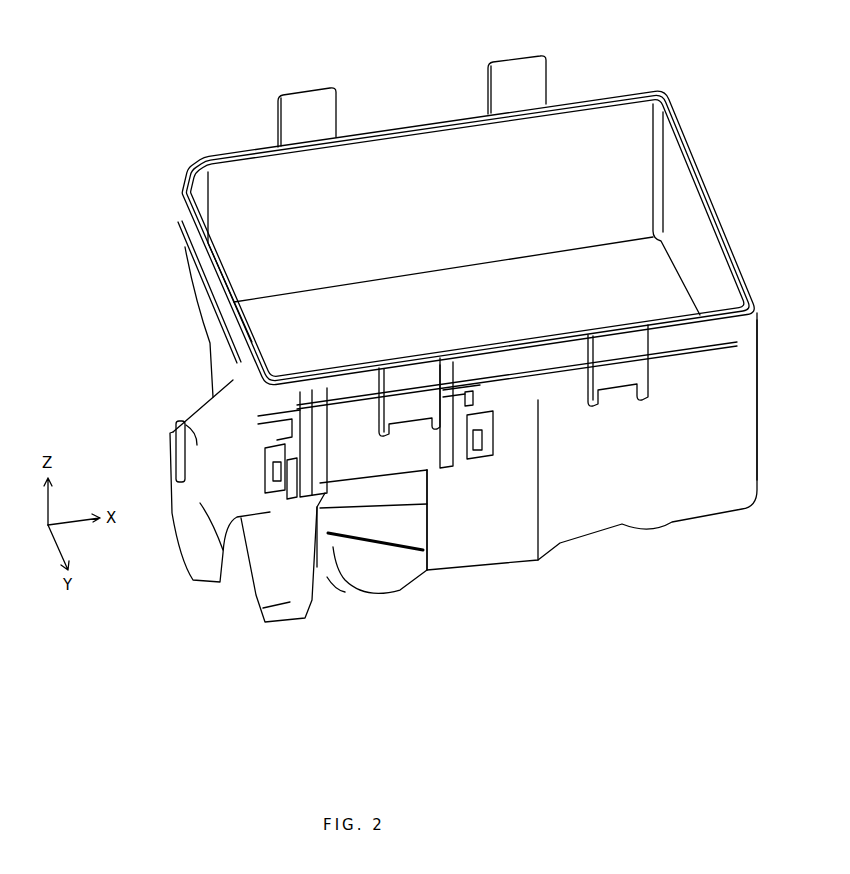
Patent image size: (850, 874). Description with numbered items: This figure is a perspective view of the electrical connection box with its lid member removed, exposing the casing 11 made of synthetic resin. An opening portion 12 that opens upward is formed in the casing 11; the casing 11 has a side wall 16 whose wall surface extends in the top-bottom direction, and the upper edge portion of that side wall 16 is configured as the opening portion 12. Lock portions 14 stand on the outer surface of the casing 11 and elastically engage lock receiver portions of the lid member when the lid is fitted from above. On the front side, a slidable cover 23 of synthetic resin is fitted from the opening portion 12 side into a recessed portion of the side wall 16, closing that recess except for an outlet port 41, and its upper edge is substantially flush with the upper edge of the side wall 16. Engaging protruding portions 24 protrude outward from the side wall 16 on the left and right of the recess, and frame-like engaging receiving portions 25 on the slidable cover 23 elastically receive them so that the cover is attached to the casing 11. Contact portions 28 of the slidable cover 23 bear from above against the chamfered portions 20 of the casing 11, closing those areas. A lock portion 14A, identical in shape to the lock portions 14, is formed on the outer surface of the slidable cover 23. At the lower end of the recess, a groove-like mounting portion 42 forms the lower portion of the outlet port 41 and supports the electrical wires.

The casing 11 is at (748, 400).
The opening portion 12 is at (688, 198).
The lock portion 14 is at (305, 108).
The lock portion 14A is at (403, 378).
The side wall 16 is at (740, 440).
The chamfered portion 20 is at (438, 358).
The slidable cover 23 is at (383, 470).
The engaging protruding portion 24 is at (272, 474).
The engaging receiving portion 25 is at (272, 511).
The contact portion 28 is at (481, 372).
The outlet port 41 is at (345, 577).
The mounting portion 42 is at (395, 575).